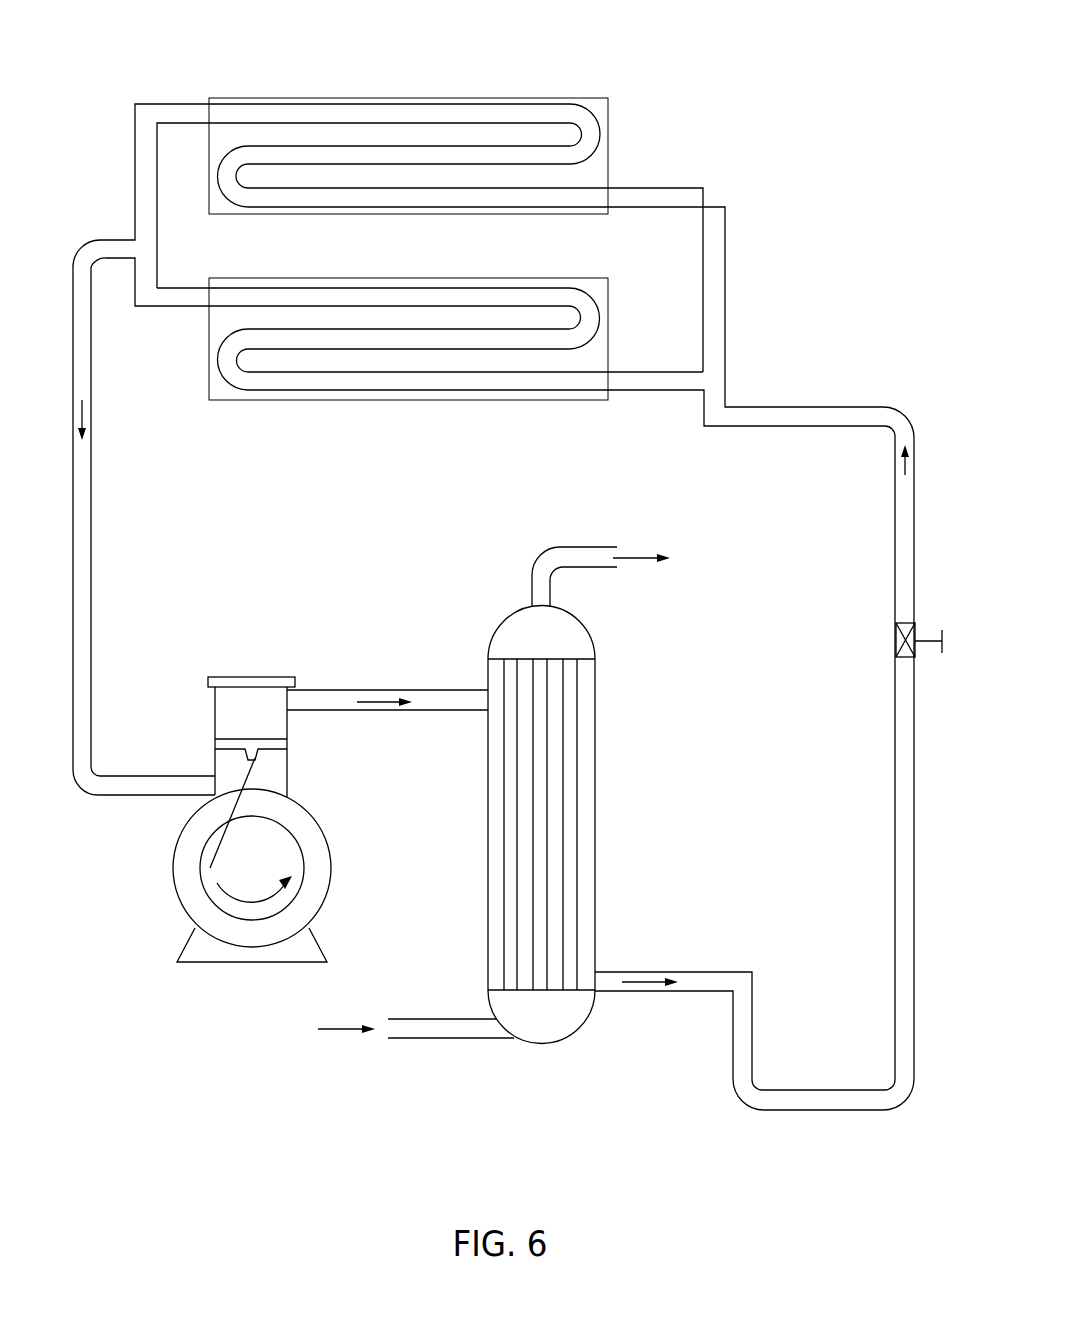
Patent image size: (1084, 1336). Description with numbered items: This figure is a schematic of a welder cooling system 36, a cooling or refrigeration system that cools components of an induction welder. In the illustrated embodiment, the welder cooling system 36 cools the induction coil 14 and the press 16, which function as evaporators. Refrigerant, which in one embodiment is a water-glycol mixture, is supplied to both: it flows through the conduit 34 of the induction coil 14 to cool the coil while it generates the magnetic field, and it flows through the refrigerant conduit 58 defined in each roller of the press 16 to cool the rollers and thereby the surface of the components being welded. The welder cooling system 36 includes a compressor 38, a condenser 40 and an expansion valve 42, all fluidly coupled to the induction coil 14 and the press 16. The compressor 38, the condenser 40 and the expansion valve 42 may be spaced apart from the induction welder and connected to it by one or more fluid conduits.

The induction coil 14 is at (408, 379).
The press 16 is at (408, 113).
The conduit 34 is at (443, 384).
The welder cooling system 36 is at (885, 145).
The compressor 38 is at (175, 866).
The condenser 40 is at (567, 1043).
The expansion valve 42 is at (893, 642).
The refrigerant conduit 58 is at (286, 156).